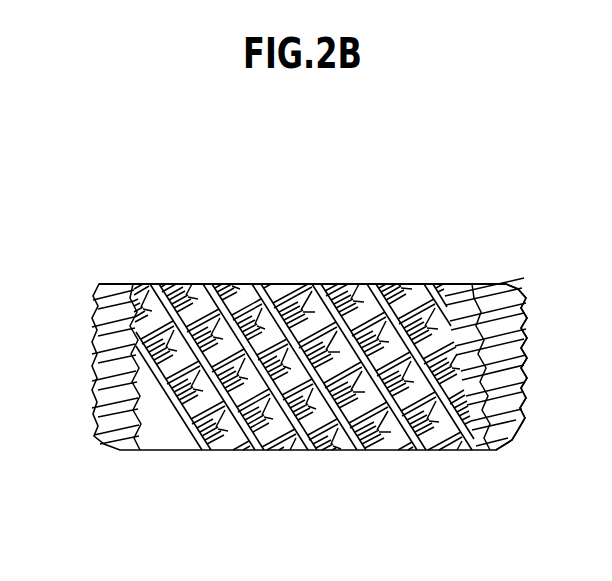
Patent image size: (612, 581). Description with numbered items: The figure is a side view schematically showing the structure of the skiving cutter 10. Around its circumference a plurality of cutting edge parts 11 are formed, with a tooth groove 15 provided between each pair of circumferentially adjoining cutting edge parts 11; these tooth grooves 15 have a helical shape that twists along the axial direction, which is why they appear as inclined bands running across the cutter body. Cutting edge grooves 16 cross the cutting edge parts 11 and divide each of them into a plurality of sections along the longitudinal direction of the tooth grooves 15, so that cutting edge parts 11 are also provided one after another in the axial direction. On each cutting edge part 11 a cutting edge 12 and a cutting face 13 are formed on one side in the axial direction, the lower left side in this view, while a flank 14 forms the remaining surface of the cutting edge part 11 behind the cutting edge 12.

The skiving cutter 10 is at (461, 262).
The cutting edge part 11 is at (178, 284).
The cutting edge 12 is at (161, 440).
The cutting face 13 is at (483, 432).
The flank 14 is at (138, 440).
The tooth groove 15 is at (207, 440).
The cutting edge groove 16 is at (316, 284).